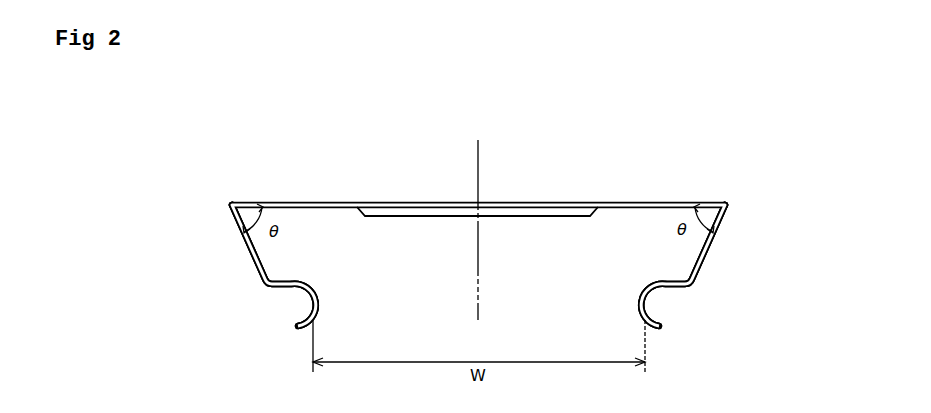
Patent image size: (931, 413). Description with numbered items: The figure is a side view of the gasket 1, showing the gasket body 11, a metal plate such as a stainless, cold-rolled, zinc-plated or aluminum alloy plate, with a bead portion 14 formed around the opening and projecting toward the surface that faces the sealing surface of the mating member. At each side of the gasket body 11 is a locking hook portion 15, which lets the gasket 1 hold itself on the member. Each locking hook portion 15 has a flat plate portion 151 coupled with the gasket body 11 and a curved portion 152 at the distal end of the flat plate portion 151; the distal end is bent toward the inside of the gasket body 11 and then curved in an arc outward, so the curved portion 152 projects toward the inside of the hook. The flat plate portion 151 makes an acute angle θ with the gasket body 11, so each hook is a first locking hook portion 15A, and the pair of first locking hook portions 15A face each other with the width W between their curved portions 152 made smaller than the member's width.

The gasket 1 is at (562, 150).
The gasket body 11 is at (636, 201).
The bead portion 14 is at (538, 217).
The locking hook portion 15 is at (192, 290).
The first locking hook portion 15A is at (478, 270).
The flat plate portion 151 is at (258, 272).
The curved portion 152 is at (292, 294).